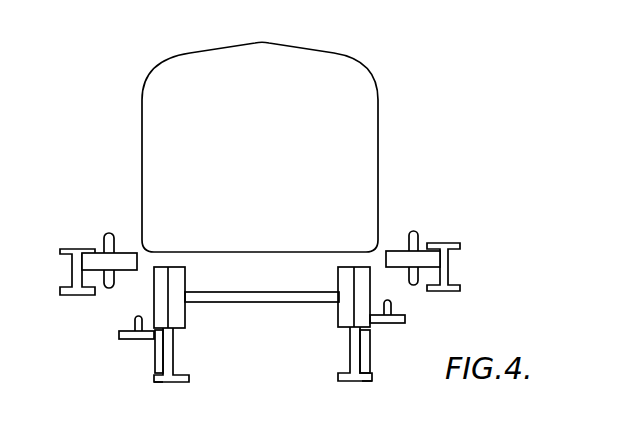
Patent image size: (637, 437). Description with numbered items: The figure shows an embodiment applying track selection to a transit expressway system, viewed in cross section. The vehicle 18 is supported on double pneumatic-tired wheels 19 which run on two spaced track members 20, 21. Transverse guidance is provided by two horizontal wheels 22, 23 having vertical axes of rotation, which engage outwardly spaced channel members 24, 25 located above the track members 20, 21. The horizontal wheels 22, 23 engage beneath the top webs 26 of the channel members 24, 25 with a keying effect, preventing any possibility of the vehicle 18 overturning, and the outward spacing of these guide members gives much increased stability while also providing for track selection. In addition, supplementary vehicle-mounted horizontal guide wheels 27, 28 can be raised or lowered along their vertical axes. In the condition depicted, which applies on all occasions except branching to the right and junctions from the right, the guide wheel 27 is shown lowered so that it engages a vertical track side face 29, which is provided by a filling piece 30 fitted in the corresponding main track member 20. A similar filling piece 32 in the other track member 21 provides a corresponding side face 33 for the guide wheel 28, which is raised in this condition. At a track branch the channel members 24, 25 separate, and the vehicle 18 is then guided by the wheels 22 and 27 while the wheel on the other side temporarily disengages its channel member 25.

The vehicle 18 is at (274, 133).
The double pneumatic-tired wheels 19 is at (178, 287).
The track member 20 is at (171, 362).
The track member 21 is at (352, 357).
The horizontal wheel 22 is at (133, 260).
The horizontal wheel 23 is at (400, 257).
The channel member 24 is at (71, 278).
The channel member 25 is at (449, 273).
The top web 26 is at (91, 250).
The supplementary horizontal guide wheel 27 is at (133, 337).
The supplementary horizontal guide wheel 28 is at (393, 323).
The vertical track side face 29 is at (152, 365).
The filling piece 30 is at (158, 347).
The filling piece 32 is at (365, 348).
The side face 33 is at (371, 365).